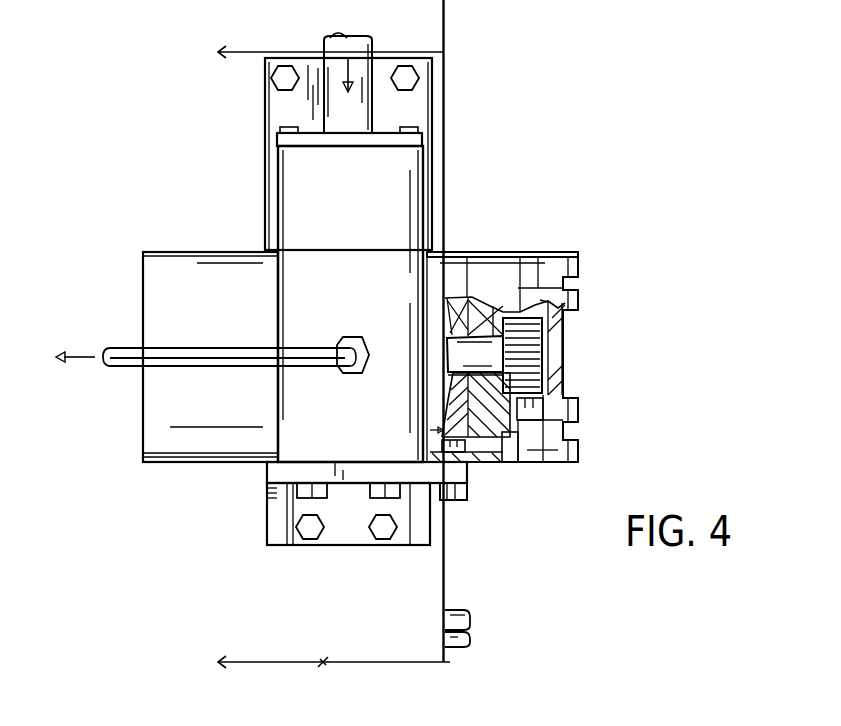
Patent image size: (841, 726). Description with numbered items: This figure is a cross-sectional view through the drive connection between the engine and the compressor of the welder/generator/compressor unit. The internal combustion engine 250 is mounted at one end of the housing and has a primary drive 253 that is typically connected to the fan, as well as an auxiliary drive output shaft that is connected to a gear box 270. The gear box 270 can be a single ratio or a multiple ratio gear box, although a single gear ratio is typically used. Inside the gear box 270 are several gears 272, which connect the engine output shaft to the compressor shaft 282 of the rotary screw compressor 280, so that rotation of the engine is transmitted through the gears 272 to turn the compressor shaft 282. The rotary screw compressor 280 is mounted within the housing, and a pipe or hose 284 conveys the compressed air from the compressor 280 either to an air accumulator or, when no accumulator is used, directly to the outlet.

The internal combustion engine 250 is at (445, 22).
The primary drive 253 is at (458, 630).
The gear box 270 is at (558, 330).
The gears 272 is at (530, 355).
The rotary screw compressor 280 is at (220, 450).
The compressor shaft 282 is at (471, 352).
The pipe or hose 284 is at (128, 360).